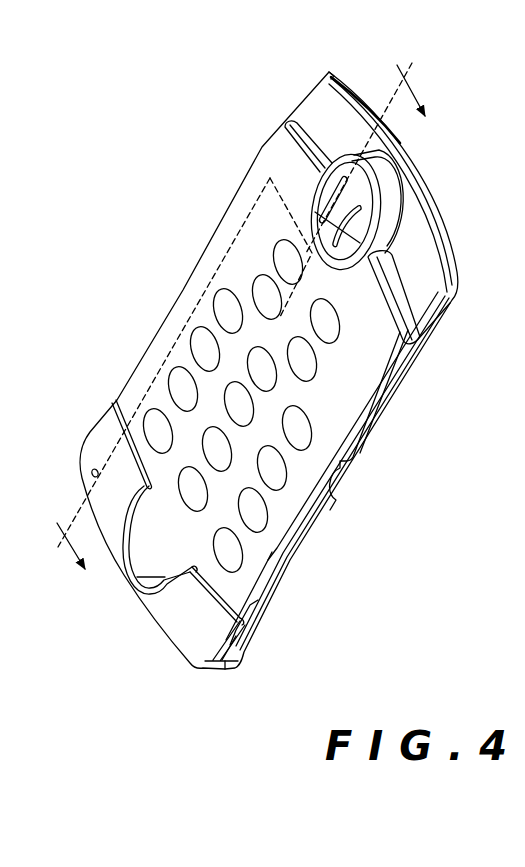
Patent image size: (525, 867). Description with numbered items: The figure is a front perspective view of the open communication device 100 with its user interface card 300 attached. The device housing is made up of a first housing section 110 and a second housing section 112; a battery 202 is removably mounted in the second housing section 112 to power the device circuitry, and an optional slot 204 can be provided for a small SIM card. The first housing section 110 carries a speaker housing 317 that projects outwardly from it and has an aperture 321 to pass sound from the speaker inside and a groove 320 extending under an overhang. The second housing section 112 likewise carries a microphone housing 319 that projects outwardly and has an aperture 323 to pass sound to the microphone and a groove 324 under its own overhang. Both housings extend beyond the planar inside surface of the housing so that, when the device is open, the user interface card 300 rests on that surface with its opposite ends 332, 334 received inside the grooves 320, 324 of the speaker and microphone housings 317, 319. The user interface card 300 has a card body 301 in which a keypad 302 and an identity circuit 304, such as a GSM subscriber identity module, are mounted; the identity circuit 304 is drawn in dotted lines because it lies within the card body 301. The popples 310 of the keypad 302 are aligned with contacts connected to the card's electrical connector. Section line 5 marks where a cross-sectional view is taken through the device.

The communication device 100 is at (243, 128).
The first housing section 110 is at (329, 72).
The second housing section 112 is at (148, 617).
The section line 5- 5 is at (252, 326).
The battery 202 is at (292, 565).
The slot 204 is at (240, 650).
The user interface card 300 is at (184, 310).
The card body 301 is at (243, 600).
The keypad 302 is at (304, 395).
The identity circuit 304 is at (267, 260).
The popples 310 is at (258, 522).
The speaker housing 317 is at (382, 189).
The microphone housing 319 is at (114, 504).
The groove 320 is at (355, 267).
The aperture 321 is at (341, 181).
The aperture 323 is at (92, 471).
The groove 324 is at (141, 503).
The end of user interface card 332 is at (363, 278).
The end of user interface card 334 is at (160, 552).